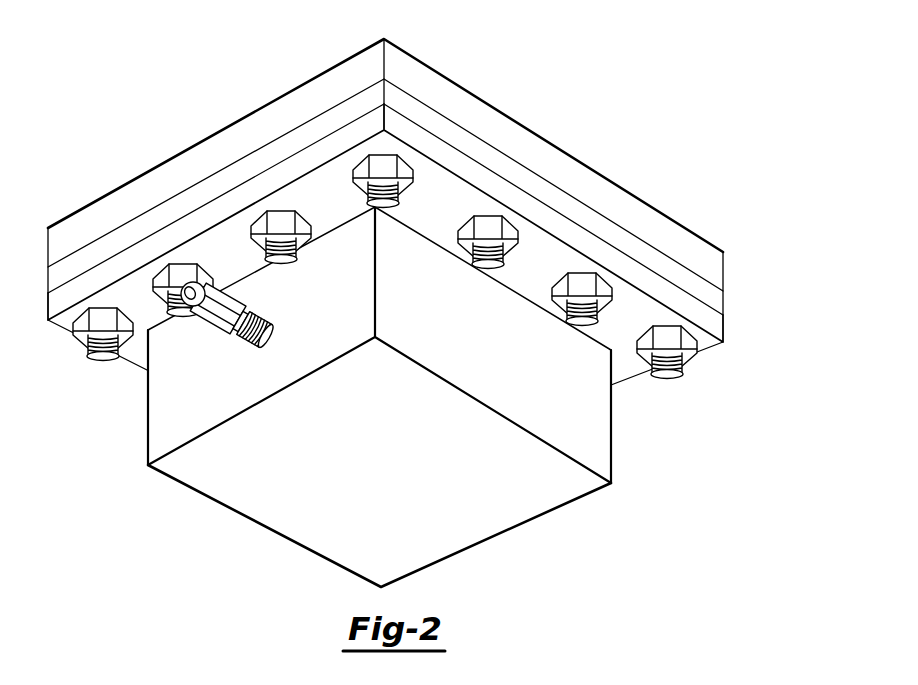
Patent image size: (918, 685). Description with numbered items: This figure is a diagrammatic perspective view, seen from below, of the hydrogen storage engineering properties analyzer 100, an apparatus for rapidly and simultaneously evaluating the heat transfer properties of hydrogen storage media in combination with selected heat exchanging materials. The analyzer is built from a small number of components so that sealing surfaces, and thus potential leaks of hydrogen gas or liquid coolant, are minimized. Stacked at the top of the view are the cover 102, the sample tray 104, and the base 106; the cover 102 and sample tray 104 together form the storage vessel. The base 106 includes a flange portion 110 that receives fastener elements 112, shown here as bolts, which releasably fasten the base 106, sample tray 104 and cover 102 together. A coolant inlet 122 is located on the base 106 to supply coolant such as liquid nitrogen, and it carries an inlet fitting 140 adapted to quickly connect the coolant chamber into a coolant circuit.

The hydrogen storage engineering properties analyzer 100 is at (251, 59).
The cover 102 is at (715, 268).
The sample tray 104 is at (715, 300).
The base 106 is at (403, 464).
The flange portion 110 is at (718, 327).
The fastener elements 112 is at (648, 370).
The coolant inlet 122 is at (166, 279).
The inlet fitting 140 is at (217, 330).